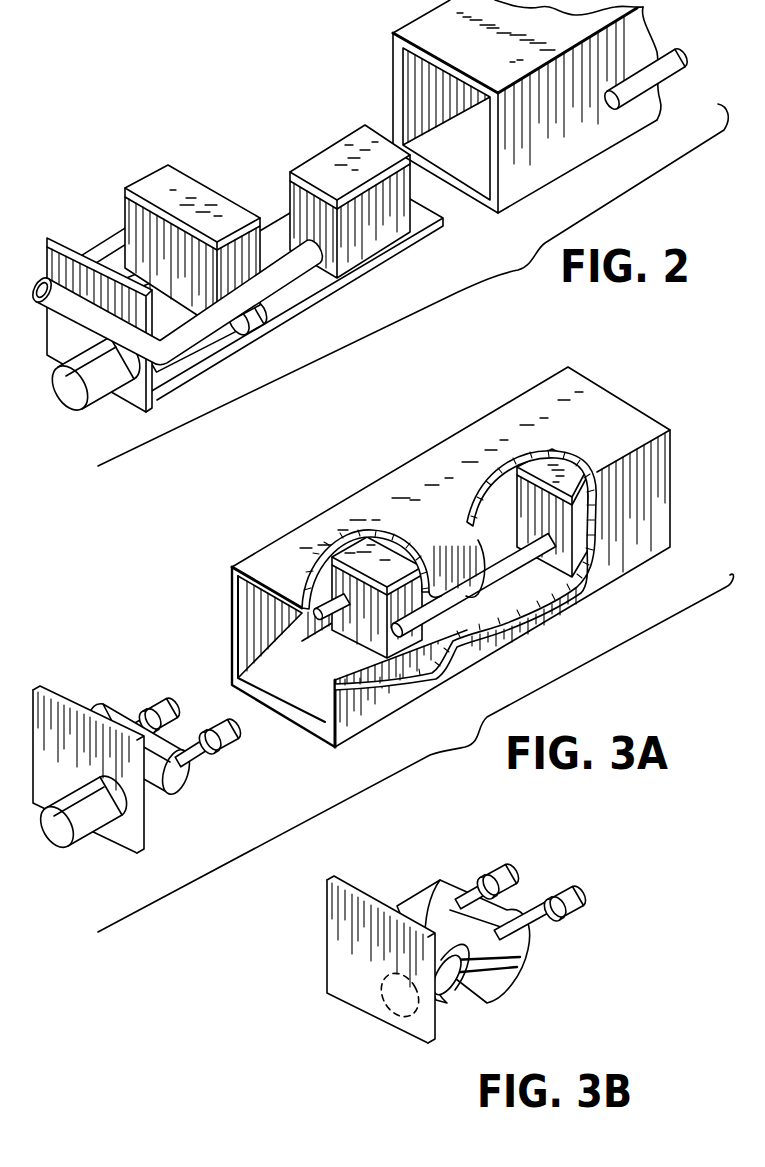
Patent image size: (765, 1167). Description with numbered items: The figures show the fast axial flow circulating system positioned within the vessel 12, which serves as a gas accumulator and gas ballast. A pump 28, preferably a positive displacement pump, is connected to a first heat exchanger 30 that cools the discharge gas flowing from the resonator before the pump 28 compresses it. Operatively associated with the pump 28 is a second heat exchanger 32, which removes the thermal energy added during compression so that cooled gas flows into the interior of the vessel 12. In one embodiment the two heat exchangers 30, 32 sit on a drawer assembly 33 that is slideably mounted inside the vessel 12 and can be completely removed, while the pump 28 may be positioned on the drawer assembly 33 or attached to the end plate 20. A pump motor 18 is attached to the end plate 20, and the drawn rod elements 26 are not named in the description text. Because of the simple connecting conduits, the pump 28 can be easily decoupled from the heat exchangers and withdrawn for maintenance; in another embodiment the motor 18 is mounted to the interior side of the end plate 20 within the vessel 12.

In FIG. 2, the vessel 12 is at (560, 152).
In FIG. 3A, the vessel 12 is at (276, 561).
In FIG. 2, the pump motor 18 is at (72, 400).
In FIG. 3A, the pump motor 18 is at (60, 842).
In FIG. 3B, the pump motor 18 is at (445, 993).
In FIG. 2, the end plate 20 is at (46, 242).
In FIG. 3A, the end plate 20 is at (62, 712).
In FIG. 3B, the end plate 20 is at (358, 988).
In FIG. 2, the tie rods with nuts 26 is at (263, 322).
In FIG. 3A, the tie rods with nuts 26 is at (213, 722).
In FIG. 3B, the tie rods with nuts 26 is at (560, 888).
In FIG. 2, the pump 28 is at (172, 336).
In FIG. 3A, the pump 28 is at (150, 800).
In FIG. 3B, the pump 28 is at (463, 942).
In FIG. 2, the first heat exchanger 30 is at (190, 198).
In FIG. 3A, the first heat exchanger 30 is at (410, 605).
In FIG. 2, the second heat exchanger 32 is at (380, 234).
In FIG. 3A, the second heat exchanger 32 is at (560, 568).
In FIG. 2, the drawer assembly 33 is at (290, 292).